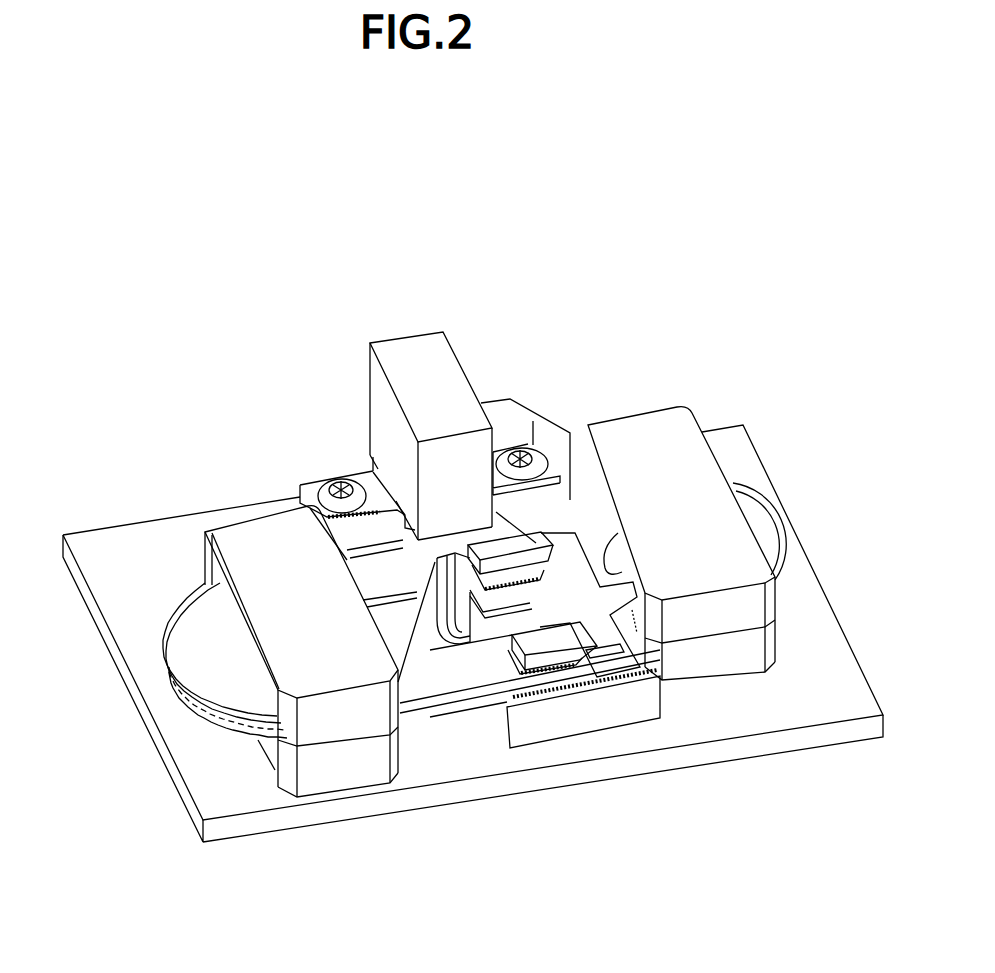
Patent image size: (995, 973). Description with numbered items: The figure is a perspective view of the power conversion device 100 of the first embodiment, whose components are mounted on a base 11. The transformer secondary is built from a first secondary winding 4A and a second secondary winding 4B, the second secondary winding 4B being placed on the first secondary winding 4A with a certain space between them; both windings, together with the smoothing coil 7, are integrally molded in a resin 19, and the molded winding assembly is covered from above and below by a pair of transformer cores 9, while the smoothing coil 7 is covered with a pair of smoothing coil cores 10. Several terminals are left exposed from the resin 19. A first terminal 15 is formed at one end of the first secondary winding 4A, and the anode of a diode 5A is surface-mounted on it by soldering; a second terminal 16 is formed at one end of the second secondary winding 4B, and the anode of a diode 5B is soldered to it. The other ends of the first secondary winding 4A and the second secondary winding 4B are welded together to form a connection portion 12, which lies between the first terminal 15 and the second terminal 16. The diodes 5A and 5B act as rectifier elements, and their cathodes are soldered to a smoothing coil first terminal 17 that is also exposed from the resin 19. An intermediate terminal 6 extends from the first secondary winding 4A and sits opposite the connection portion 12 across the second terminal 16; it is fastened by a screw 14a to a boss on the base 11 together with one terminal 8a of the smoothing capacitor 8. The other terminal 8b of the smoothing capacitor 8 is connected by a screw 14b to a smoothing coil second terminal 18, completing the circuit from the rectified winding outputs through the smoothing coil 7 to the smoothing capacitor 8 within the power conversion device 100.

The power conversion device 100 is at (434, 201).
The first secondary winding 4A is at (195, 713).
The second secondary winding 4B is at (203, 650).
The diode 5A is at (550, 657).
The diode 5B is at (533, 550).
The intermediate terminal 6 is at (300, 485).
The smoothing coil 7 is at (773, 523).
The smoothing capacitor 8 is at (403, 367).
The terminal of the smoothing capacitor 8a is at (372, 475).
The another terminal of the smoothing capacitor 8b is at (548, 473).
The transformer cores 9 is at (230, 543).
The smoothing coil cores 10 is at (683, 437).
The base 11 is at (155, 543).
The connection portion 12 is at (443, 592).
The screw 14a is at (338, 485).
The screw 14b is at (517, 460).
The first terminal 15 is at (500, 685).
The second terminal 16 is at (477, 600).
The smoothing coil first terminal 17 is at (618, 662).
The smoothing coil second terminal 18 is at (497, 410).
The resin 19 is at (592, 683).